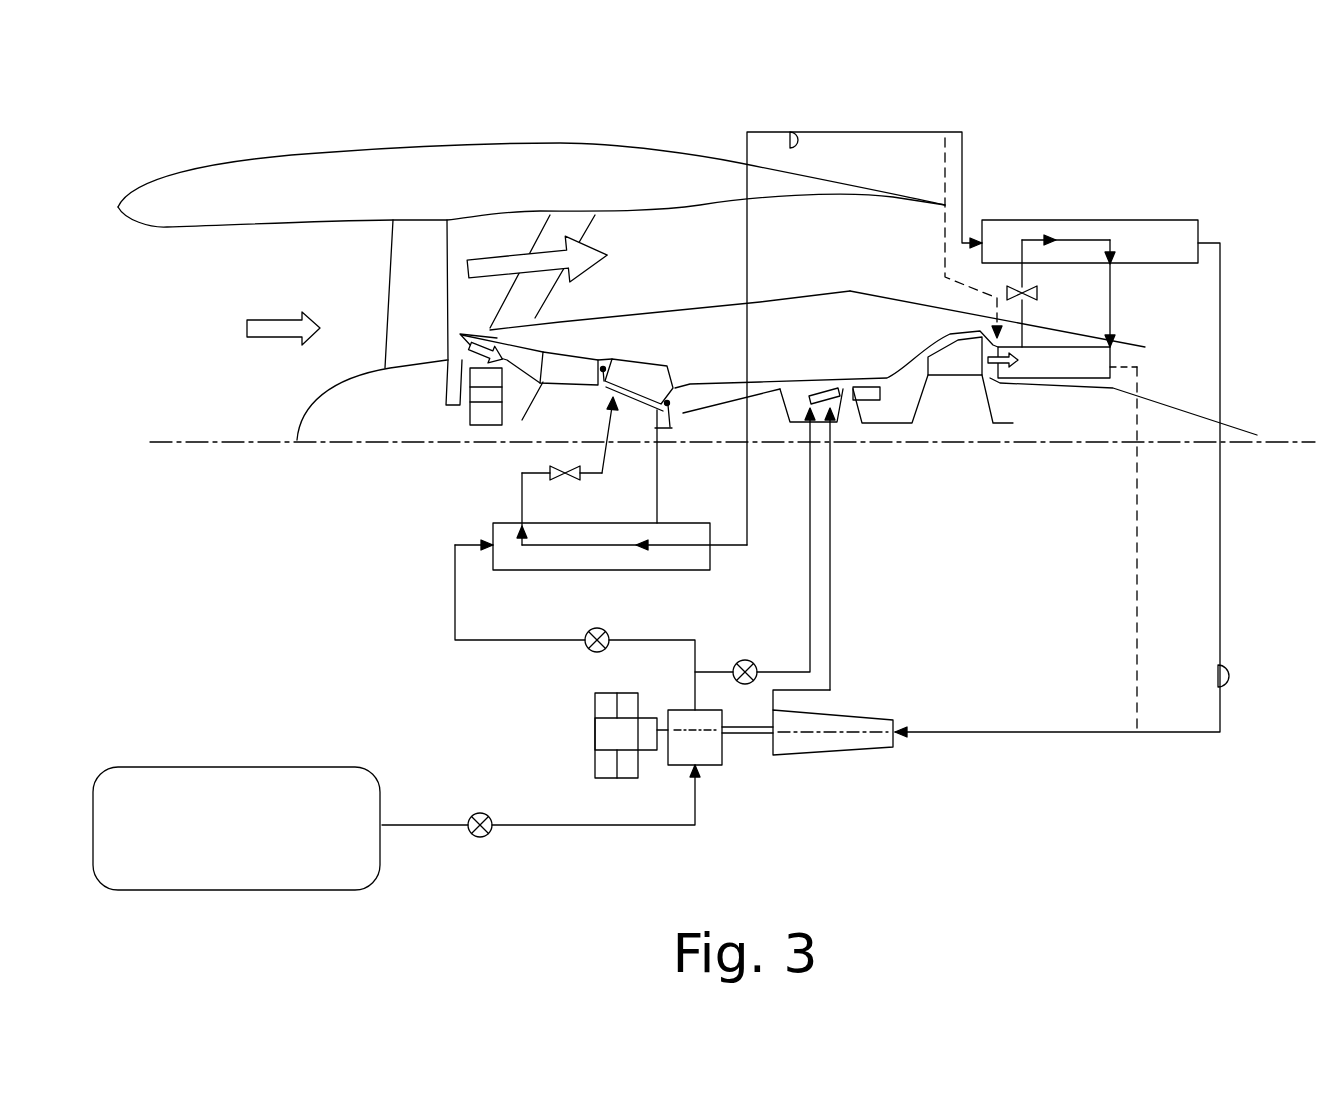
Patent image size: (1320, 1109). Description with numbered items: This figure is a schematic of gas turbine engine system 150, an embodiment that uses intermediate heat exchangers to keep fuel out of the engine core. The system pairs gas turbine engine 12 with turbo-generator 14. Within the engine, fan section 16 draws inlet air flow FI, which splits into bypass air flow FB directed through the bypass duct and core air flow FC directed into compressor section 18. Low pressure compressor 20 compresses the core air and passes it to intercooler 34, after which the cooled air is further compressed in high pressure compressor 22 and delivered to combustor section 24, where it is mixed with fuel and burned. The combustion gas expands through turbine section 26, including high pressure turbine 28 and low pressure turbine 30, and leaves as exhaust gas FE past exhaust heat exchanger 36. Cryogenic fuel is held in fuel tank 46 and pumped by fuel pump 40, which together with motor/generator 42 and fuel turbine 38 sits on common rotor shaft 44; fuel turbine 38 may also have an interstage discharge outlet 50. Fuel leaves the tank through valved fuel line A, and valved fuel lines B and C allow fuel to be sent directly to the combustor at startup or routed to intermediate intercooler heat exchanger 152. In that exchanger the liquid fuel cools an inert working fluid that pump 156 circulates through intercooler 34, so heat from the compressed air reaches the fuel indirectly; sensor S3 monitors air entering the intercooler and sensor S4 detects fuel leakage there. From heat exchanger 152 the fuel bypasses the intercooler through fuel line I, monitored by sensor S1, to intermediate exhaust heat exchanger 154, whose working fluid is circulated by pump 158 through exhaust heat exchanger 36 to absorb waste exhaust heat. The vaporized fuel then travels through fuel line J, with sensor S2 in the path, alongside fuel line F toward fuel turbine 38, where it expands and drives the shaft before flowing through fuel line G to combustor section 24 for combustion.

The gas turbine engine 12 is at (366, 238).
The turbo-generator 14 is at (905, 773).
The fan section 16 is at (448, 208).
The compressor section 18 is at (780, 341).
The low pressure compressor 20 is at (576, 368).
The high pressure compressor 22 is at (693, 413).
The combustor section 24 is at (826, 387).
The turbine section 26 is at (847, 326).
The high pressure turbine 28 is at (867, 401).
The low pressure turbine 30 is at (955, 356).
The intercooler 34 is at (639, 385).
The exhaust heat exchanger 36 is at (1054, 362).
The fuel turbine 38 is at (820, 755).
The fuel pump 40 is at (695, 737).
The motor/generator 42 is at (631, 735).
The rotor shaft 44 is at (742, 738).
The fuel tank 46 is at (236, 828).
The interstage discharge outlet 50 is at (833, 710).
The gas turbine engine system 150 is at (1118, 160).
The intermediate intercooler heat exchanger 152 is at (601, 521).
The intermediate exhaust heat exchanger 154 is at (1090, 283).
The pump 156 is at (546, 471).
The pump 158 is at (1038, 293).
The sensor S1 is at (800, 131).
The sensor S2 is at (1232, 676).
The sensor S3 is at (597, 392).
The sensor S4 is at (672, 432).
The fuel line I is at (884, 131).
The fuel line J is at (1222, 612).
The fuel line F is at (1140, 552).
The fuel line G is at (832, 600).
The valved fuel line A is at (486, 836).
The valved fuel line B is at (744, 660).
The valved fuel line C is at (597, 628).
The bypass air flow FB is at (512, 260).
The core air flow FC is at (486, 341).
The inlet air flow FI is at (275, 342).
The exhaust gas FE is at (991, 365).